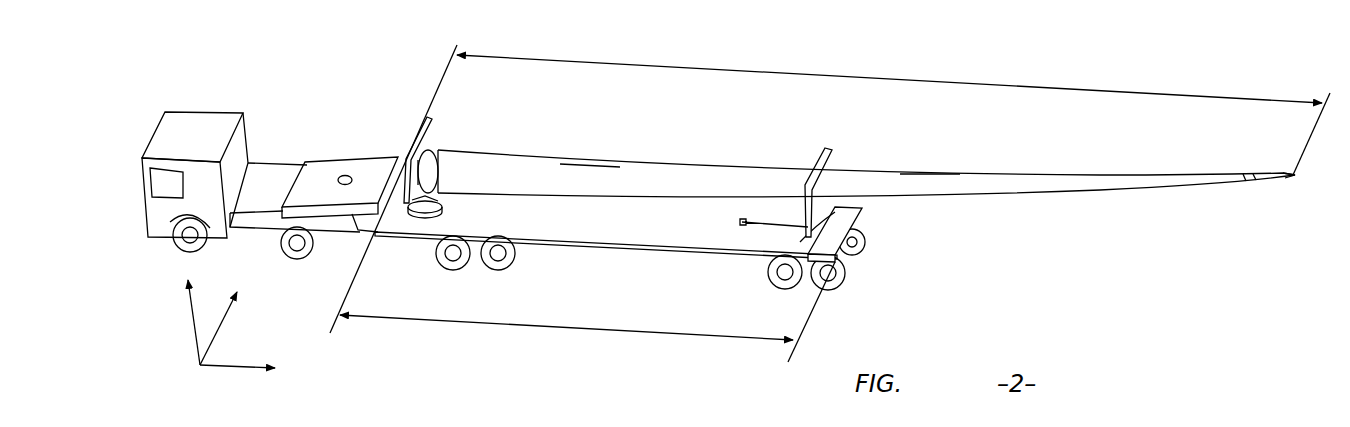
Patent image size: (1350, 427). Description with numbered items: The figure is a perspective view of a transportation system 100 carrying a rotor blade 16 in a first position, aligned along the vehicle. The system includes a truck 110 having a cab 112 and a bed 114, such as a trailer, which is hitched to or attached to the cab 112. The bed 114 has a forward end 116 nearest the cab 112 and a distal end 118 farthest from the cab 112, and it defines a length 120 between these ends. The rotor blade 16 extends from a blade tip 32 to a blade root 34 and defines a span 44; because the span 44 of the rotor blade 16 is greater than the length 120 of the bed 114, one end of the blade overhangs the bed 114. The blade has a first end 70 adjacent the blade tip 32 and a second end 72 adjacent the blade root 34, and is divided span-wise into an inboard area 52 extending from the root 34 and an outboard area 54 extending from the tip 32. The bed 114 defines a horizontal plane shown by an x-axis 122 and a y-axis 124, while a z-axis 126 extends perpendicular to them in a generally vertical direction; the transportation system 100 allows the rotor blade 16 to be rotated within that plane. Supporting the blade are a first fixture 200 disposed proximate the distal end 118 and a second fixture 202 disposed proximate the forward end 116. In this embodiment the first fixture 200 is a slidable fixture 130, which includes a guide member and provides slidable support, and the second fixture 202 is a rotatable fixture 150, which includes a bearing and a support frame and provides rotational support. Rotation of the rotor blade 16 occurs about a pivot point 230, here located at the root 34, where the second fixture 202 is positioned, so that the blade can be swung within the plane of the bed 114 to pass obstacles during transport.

The transportation system 100 is at (305, 65).
The truck 110 is at (192, 96).
The cab 112 is at (208, 122).
The bed 114 is at (678, 225).
The forward end 116 is at (400, 218).
The distal end 118 is at (860, 225).
The length of the bed 120 is at (538, 328).
The x-axis 122 is at (235, 367).
The y-axis 124 is at (217, 325).
The z-axis 126 is at (195, 333).
The slidable fixture 130 is at (790, 233).
The rotatable fixture 150 is at (452, 217).
The rotor blade 16 is at (1025, 160).
The blade tip 32 is at (1260, 163).
The blade root 34 is at (445, 142).
The span 44 is at (705, 68).
The inboard area 52 is at (583, 170).
The outboard area 54 is at (932, 180).
The first end 70 is at (1293, 177).
The second end 72 is at (408, 147).
The first fixture 200 is at (793, 210).
The second fixture 202 is at (460, 205).
The pivot point 230 is at (432, 143).